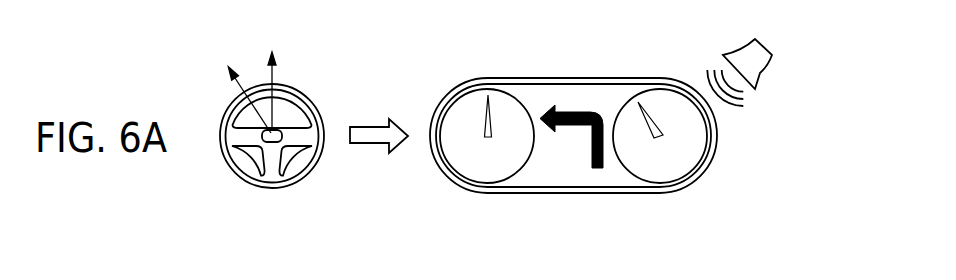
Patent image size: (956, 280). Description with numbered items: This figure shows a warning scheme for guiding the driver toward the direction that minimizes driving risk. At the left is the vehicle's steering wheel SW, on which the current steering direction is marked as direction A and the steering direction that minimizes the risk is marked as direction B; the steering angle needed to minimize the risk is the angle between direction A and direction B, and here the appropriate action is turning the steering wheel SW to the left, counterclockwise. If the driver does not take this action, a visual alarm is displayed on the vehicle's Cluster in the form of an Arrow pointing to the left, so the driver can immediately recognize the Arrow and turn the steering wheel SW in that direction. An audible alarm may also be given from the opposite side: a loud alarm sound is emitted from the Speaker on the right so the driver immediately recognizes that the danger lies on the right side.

The steering wheel SW is at (272, 189).
The direction A is at (272, 81).
The direction B is at (244, 89).
The cluster Cluster is at (620, 184).
The arrow Arrow is at (573, 110).
The speaker Speaker is at (760, 73).